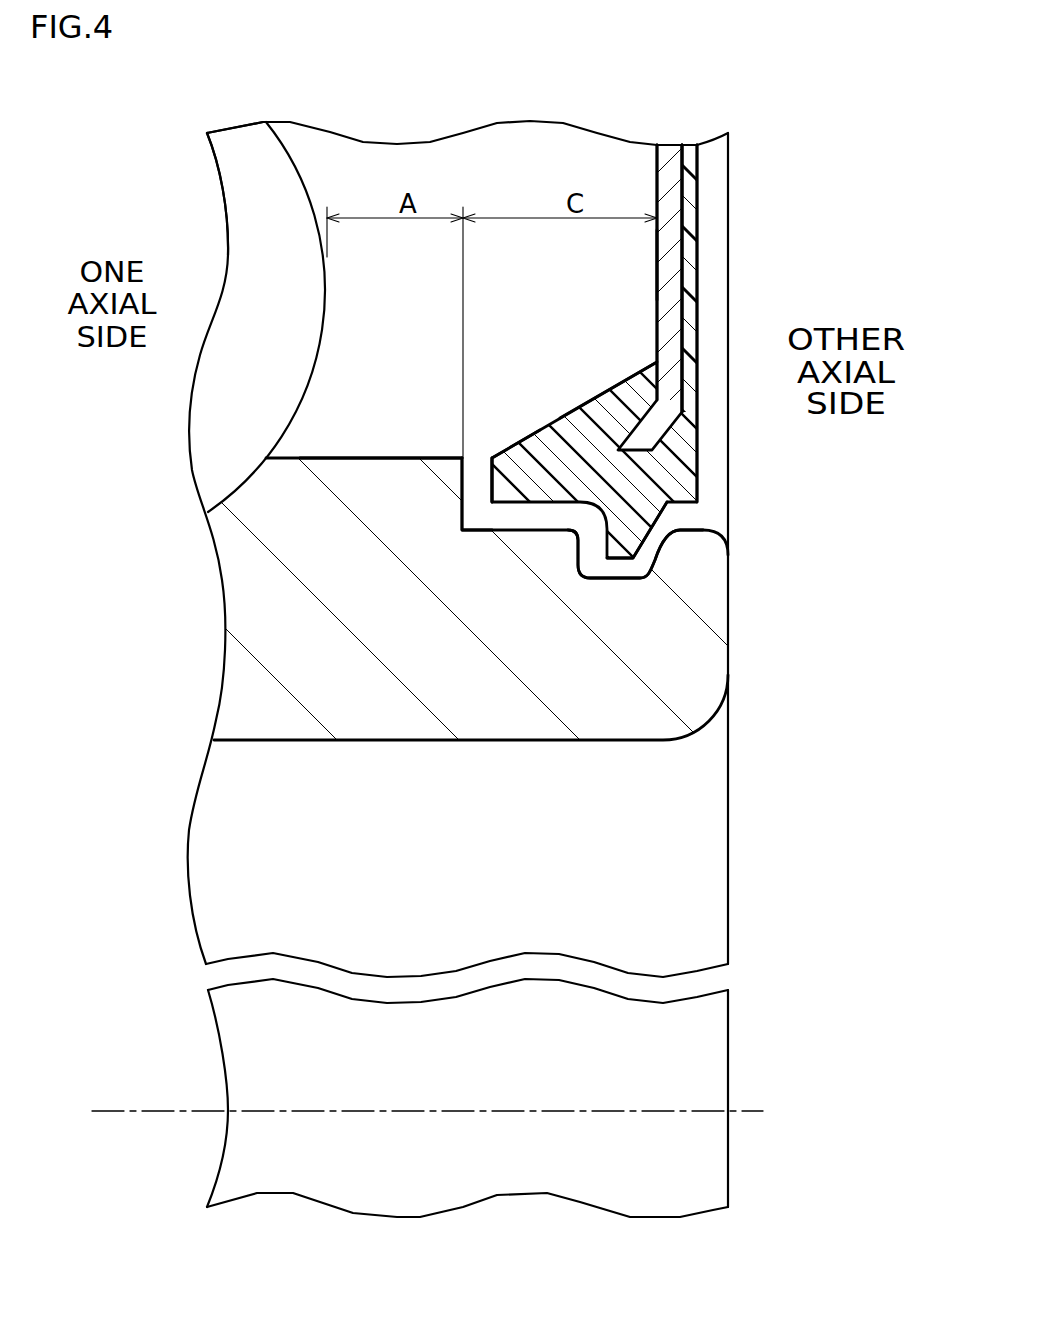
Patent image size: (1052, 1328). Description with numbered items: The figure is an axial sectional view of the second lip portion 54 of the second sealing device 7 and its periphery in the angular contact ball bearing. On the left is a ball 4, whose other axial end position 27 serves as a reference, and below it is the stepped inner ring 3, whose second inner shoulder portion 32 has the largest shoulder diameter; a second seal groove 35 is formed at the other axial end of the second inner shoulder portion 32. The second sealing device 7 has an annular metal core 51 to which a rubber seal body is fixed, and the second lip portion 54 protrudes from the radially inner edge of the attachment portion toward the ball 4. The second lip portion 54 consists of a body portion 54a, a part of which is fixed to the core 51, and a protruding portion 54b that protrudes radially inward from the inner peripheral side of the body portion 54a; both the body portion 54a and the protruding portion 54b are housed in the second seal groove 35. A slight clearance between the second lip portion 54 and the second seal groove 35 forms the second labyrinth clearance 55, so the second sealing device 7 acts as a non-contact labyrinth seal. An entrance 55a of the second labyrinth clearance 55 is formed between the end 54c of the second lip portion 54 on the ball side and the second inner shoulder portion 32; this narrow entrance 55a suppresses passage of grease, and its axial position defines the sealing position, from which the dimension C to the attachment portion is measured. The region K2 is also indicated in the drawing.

The inner ring 3 is at (501, 617).
The ball 4 is at (316, 275).
The second sealing device 7 is at (698, 308).
The other axial end position of the ball 27 is at (328, 292).
The second inner shoulder portion 32 is at (393, 478).
The second seal groove 35 is at (669, 518).
The core 51 is at (670, 238).
The second lip portion 54 is at (606, 357).
The body portion 54a is at (587, 422).
The protruding portion 54b is at (625, 518).
The end of the second lip portion 54c is at (490, 478).
The second labyrinth clearance 55 is at (492, 457).
The entrance 55a is at (473, 460).
The clearance K2 is at (631, 262).